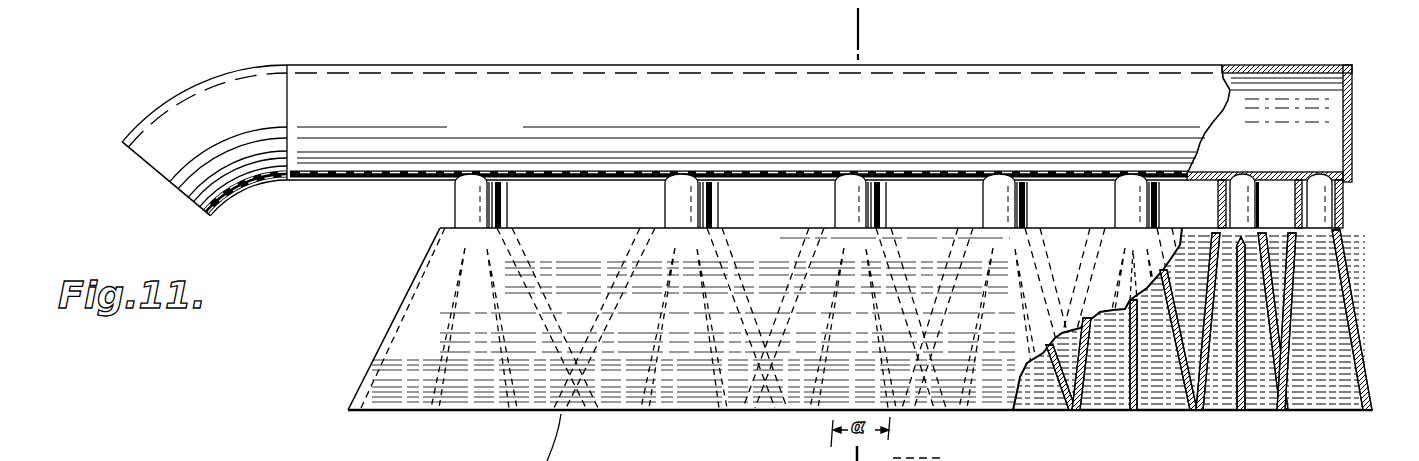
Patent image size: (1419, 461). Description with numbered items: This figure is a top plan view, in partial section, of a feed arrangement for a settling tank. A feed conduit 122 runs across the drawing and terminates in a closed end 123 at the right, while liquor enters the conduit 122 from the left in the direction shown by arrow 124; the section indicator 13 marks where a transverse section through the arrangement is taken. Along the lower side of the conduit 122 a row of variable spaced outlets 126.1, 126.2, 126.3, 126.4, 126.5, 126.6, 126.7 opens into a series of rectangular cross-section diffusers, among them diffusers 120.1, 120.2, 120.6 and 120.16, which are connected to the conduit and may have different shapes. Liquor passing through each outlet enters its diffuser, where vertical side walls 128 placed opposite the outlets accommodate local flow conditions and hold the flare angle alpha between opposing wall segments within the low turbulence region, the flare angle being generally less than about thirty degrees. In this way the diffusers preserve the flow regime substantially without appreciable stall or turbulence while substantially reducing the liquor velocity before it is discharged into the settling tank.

The section line indicator for FIG. 13 is at (838, 28).
The feed conduit 122 is at (247, 196).
The end 123 is at (1352, 132).
The arrow 124 is at (148, 192).
The outlet 126.1 is at (456, 205).
The outlet 126.2 is at (665, 205).
The outlet 126.3 is at (836, 206).
The outlet 126.4 is at (983, 206).
The outlet 126.5 is at (1137, 201).
The outlet 126.6 is at (1244, 201).
The outlet 126.7 is at (1318, 196).
The vertical side walls 128 is at (450, 322).
The diffuser 120.1 is at (383, 394).
The diffuser 120.2 is at (467, 393).
The diffuser 120.6 is at (762, 393).
The diffuser 120.16 is at (1320, 397).